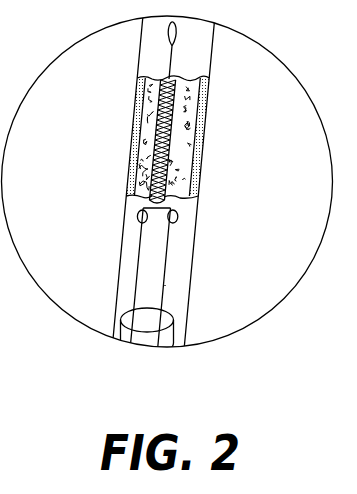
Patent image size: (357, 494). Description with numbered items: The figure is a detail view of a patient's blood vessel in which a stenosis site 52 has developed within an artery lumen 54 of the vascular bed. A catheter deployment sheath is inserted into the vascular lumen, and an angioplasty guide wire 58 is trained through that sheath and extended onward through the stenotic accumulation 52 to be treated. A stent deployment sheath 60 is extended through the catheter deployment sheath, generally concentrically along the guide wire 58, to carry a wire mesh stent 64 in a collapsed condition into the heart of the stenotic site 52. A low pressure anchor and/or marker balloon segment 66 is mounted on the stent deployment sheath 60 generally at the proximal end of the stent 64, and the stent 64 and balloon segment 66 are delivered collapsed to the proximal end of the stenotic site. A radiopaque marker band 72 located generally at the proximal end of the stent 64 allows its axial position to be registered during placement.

The stenosis site 52 is at (133, 128).
The artery lumen 54 is at (194, 247).
The guide wire 58 is at (172, 57).
The stent deployment sheath 60 is at (163, 285).
The wire mesh stent 64 is at (168, 126).
The anchor and/or marker balloon segment 66 is at (136, 216).
The radiopaque marker band 72 is at (152, 203).